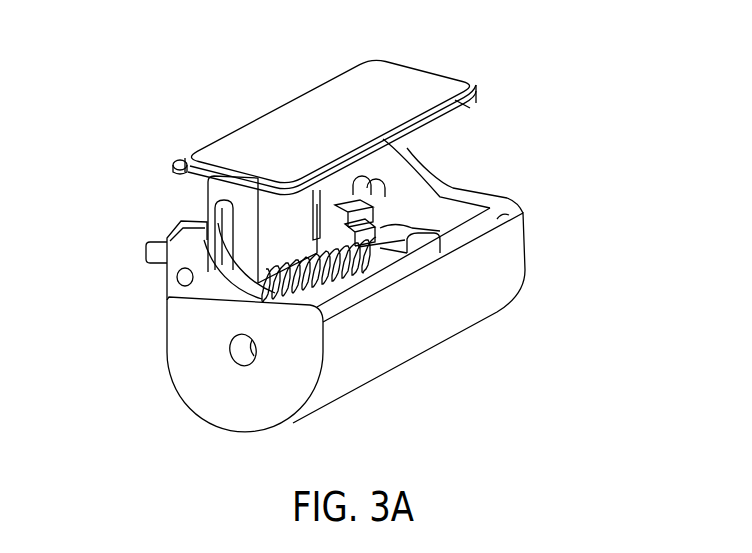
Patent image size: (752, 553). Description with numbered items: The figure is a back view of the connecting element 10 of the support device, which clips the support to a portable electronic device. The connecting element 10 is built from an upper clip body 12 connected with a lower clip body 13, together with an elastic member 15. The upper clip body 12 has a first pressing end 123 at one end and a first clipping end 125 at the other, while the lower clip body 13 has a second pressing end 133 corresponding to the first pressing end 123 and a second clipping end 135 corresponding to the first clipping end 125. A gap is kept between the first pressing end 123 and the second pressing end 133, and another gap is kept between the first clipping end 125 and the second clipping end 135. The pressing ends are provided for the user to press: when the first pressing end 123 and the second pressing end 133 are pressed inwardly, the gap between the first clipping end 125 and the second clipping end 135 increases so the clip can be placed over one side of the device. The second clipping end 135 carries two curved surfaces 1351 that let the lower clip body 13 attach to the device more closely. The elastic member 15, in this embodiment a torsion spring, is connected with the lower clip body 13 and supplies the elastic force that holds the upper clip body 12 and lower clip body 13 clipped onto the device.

The connecting element 10 is at (574, 134).
The upper clip body 12 is at (293, 120).
The first pressing end 123 is at (148, 258).
The first clipping end 125 is at (462, 122).
The second pressing end 133 is at (180, 158).
The lower clip body 13 is at (508, 290).
The second clipping end 135 is at (508, 214).
The curved surfaces 1351 is at (172, 328).
The elastic member 15 is at (450, 232).